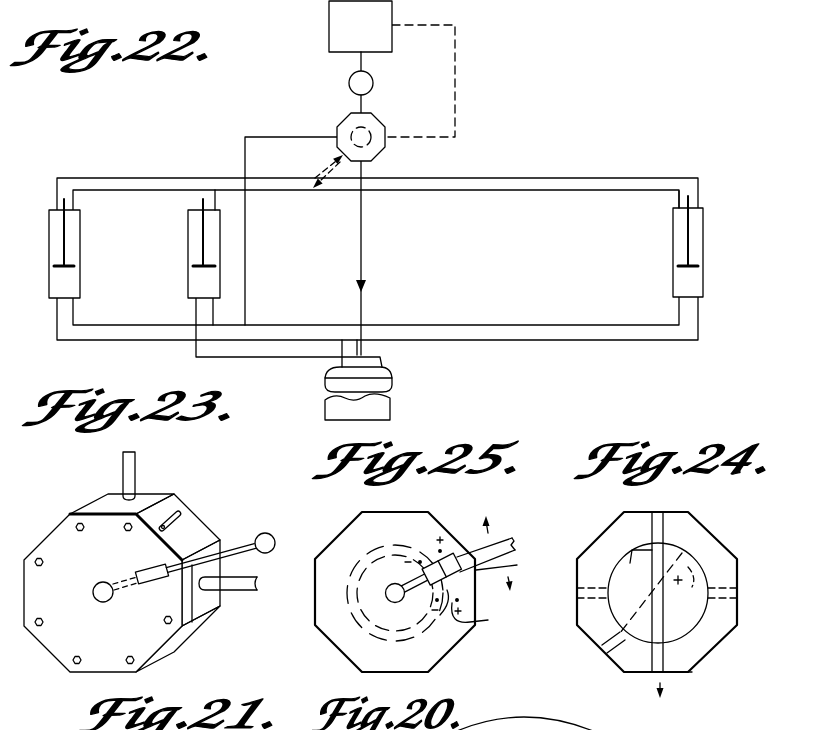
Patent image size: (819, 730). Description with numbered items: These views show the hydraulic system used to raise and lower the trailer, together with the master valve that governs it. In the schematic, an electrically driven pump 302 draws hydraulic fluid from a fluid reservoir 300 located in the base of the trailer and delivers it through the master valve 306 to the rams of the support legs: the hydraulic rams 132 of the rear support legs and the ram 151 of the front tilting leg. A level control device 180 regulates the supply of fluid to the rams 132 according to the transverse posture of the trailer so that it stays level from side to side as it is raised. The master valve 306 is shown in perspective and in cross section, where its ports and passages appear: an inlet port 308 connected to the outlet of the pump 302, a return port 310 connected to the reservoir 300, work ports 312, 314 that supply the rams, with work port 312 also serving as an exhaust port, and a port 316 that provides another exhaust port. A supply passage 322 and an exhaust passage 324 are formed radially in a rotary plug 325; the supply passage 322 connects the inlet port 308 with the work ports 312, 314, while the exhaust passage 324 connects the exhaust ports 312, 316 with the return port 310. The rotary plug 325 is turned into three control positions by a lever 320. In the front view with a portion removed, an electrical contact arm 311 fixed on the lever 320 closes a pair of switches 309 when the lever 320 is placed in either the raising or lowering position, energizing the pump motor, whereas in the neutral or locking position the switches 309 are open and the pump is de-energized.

In FIG. 22, the fluid reservoir 300 is at (360, 36).
In FIG. 22, the electrically driven pump 302 is at (373, 83).
In FIG. 22, the master valve 306 is at (378, 121).
In FIG. 23, the master valve 306 is at (197, 492).
In FIG. 25, the master valve 306 is at (455, 511).
In FIG. 24, the master valve 306 is at (597, 523).
In FIG. 22, the hydraulic ram 132 is at (67, 261).
In FIG. 22, the ram 151 is at (673, 258).
In FIG. 22, the level control device 180 is at (392, 405).
In FIG. 23, the lever 320 is at (244, 548).
In FIG. 25, the electrical contact arm 311 is at (473, 554).
In FIG. 25, the switches 309 is at (432, 554).
In FIG. 24, the inlet port 308 is at (657, 540).
In FIG. 24, the return port 310 is at (737, 583).
In FIG. 24, the work port 312 is at (623, 647).
In FIG. 24, the work port 314 is at (692, 673).
In FIG. 24, the port 316 is at (577, 597).
In FIG. 24, the supply passage 322 is at (658, 627).
In FIG. 24, the exhaust passage 324 is at (684, 587).
In FIG. 24, the rotary plug 325 is at (690, 618).